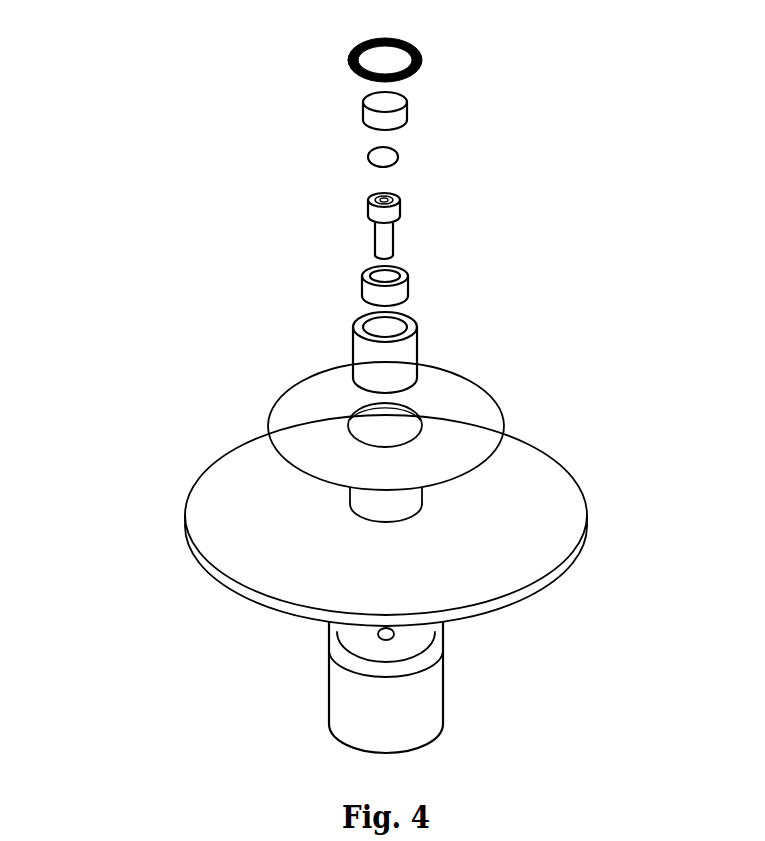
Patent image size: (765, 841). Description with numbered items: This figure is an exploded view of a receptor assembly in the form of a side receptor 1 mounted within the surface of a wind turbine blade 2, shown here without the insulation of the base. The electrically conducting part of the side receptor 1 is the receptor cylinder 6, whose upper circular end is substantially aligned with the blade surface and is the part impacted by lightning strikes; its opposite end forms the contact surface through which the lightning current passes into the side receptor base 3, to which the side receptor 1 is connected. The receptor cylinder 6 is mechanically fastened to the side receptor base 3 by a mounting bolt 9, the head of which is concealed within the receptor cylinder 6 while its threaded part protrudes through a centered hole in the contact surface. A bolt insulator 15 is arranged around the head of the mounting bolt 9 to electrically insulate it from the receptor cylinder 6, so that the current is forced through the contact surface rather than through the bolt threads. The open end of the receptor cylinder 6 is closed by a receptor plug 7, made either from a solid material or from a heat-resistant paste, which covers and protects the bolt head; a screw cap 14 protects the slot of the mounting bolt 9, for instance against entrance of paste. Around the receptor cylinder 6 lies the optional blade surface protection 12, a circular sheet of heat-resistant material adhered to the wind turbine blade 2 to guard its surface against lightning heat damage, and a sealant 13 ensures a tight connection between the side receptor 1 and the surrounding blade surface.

The side receptor 1 is at (566, 628).
The wind turbine blade 2 is at (213, 515).
The side receptor base 3 is at (343, 702).
The receptor cylinder 6 is at (355, 344).
The receptor plug 7 is at (365, 125).
The mounting bolt 9 is at (373, 224).
The blade surface protection 12 is at (473, 428).
The sealant 13 is at (422, 63).
The screw cap 14 is at (400, 156).
The bolt insulator 15 is at (408, 295).